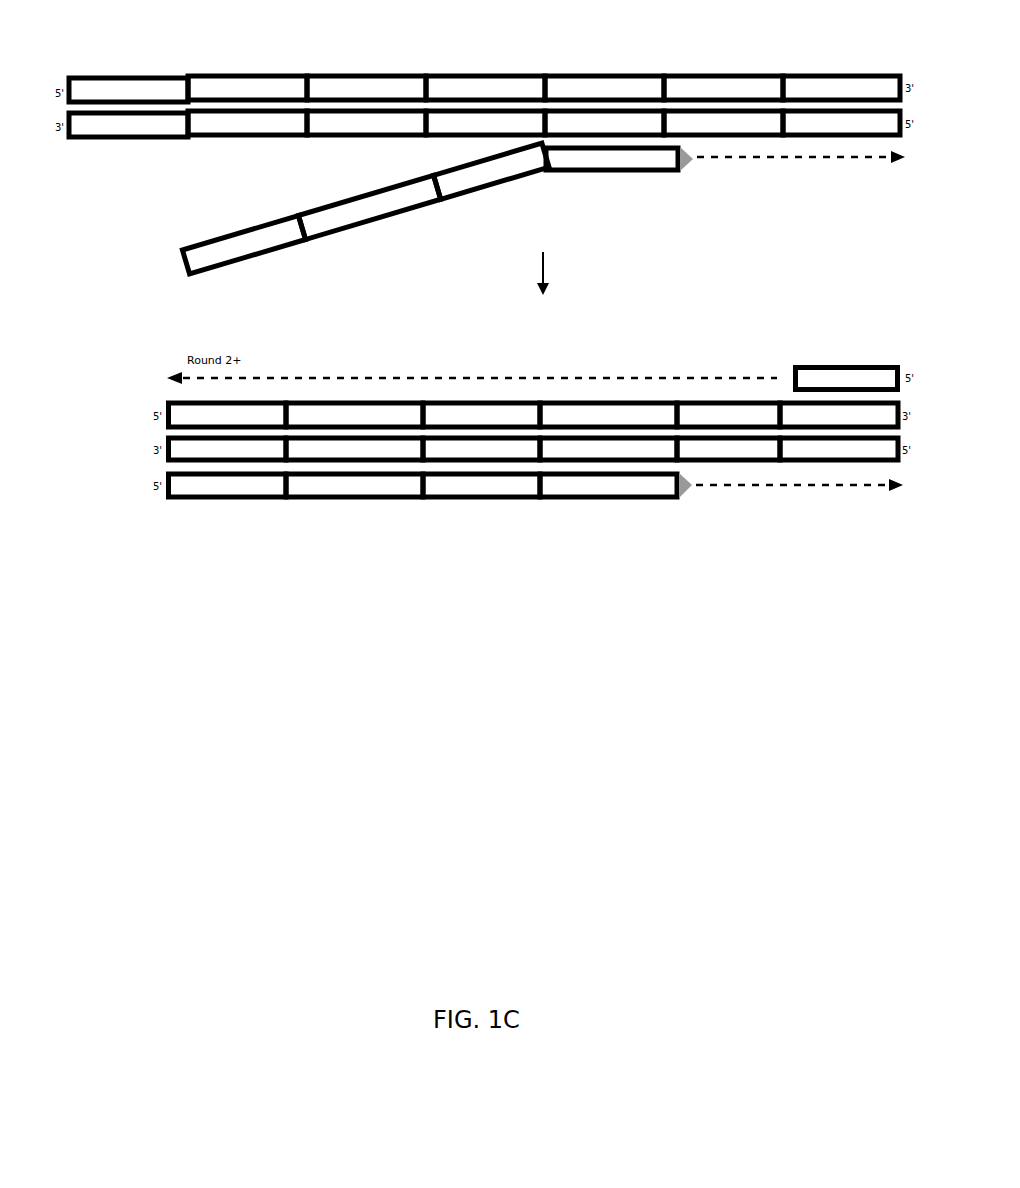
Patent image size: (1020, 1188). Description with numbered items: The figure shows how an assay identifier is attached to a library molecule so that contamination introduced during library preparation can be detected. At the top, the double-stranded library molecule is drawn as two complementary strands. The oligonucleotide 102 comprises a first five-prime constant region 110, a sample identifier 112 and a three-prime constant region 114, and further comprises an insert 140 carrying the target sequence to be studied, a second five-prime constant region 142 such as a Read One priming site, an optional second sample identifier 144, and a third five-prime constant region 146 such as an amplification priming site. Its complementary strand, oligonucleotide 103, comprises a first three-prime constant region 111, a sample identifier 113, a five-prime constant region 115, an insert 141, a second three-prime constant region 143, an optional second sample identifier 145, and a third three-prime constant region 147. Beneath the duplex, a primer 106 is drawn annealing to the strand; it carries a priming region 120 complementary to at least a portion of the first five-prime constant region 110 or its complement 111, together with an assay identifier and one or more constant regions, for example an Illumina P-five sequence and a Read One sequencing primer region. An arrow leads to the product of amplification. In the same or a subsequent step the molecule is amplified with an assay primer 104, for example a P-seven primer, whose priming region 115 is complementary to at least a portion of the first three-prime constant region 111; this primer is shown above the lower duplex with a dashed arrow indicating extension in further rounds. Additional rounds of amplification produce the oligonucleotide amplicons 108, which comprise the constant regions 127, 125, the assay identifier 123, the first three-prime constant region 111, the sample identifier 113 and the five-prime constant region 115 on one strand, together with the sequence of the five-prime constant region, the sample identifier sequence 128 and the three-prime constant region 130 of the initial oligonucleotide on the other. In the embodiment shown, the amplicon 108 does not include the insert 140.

The oligonucleotide 102 is at (64, 77).
The oligonucleotide 103 is at (65, 143).
The assay primer 104 is at (896, 347).
The primer 106 is at (442, 208).
The oligonucleotide amplicon 108 is at (160, 425).
The first 5' constant region 110 is at (604, 88).
The first 3' constant region 111 is at (608, 285).
The sample identifier 112 is at (723, 88).
The sample identifier 113 is at (723, 285).
The 3' constant region 114 is at (841, 88).
The 5' constant region 115 is at (840, 285).
The priming region 120 is at (616, 322).
The assay identifier 123 is at (481, 449).
The constant region 125 is at (354, 449).
The constant region 127 is at (228, 449).
The sample identifier sequence 128 is at (728, 415).
The 3' constant region 130 is at (839, 415).
The insert 140 is at (485, 88).
The insert 141 is at (485, 123).
The second 5' constant region 142 is at (366, 88).
The second 3' constant region 143 is at (366, 123).
The second sample identifier 144 is at (247, 88).
The second sample identifier 145 is at (247, 123).
The third 5' constant region 146 is at (128, 90).
The third 3' constant region 147 is at (128, 125).